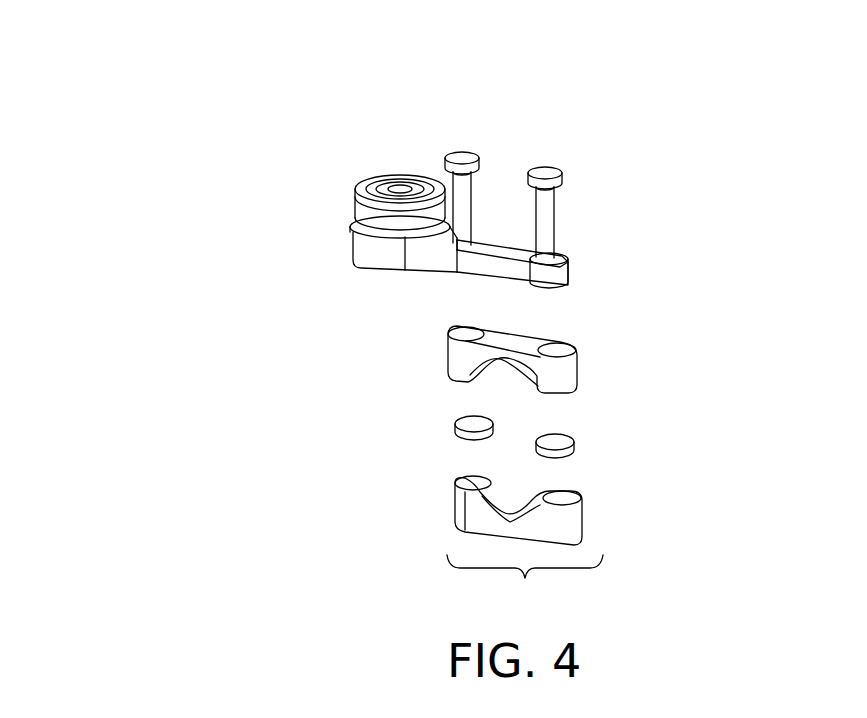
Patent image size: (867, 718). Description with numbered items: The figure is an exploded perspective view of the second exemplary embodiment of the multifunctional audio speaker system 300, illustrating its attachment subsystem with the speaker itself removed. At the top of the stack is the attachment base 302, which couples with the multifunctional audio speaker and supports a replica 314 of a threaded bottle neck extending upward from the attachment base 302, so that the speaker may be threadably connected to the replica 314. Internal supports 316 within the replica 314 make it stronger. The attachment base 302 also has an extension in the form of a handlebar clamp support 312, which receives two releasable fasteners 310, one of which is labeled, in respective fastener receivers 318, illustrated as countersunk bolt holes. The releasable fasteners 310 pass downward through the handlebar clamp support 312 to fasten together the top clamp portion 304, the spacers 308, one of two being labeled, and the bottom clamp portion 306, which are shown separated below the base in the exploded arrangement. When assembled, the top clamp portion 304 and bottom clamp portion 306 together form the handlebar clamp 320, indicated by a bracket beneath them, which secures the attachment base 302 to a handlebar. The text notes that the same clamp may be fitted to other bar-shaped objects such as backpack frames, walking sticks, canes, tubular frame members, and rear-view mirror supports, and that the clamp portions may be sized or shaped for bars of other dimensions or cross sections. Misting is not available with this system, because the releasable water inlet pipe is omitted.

The multifunctional audio speaker system 300 is at (260, 76).
The attachment base 302 is at (390, 249).
The top clamp portion 304 is at (560, 373).
The bottom clamp portion 306 is at (570, 517).
The spacers 308 is at (457, 423).
The releasable fasteners 310 is at (545, 168).
The handlebar clamp support 312 is at (500, 267).
The replica of a threaded bottle neck 314 is at (372, 178).
The internal supports 316 is at (408, 178).
The fastener receivers 318 is at (558, 260).
The handlebar clamp 320 is at (525, 584).